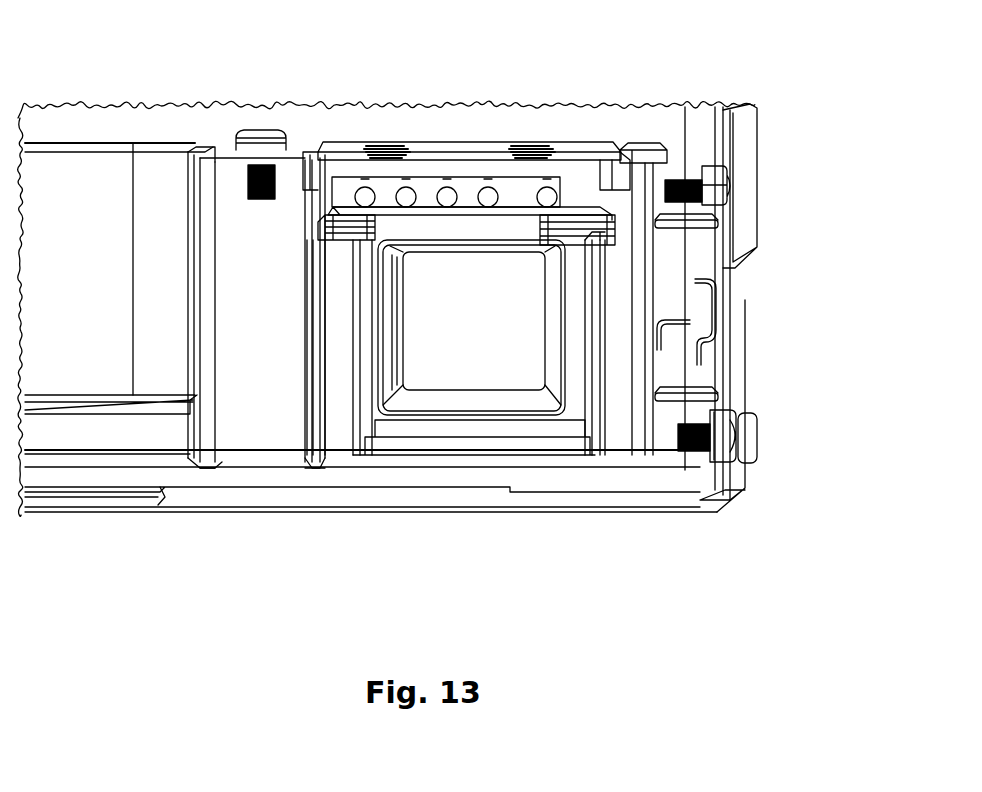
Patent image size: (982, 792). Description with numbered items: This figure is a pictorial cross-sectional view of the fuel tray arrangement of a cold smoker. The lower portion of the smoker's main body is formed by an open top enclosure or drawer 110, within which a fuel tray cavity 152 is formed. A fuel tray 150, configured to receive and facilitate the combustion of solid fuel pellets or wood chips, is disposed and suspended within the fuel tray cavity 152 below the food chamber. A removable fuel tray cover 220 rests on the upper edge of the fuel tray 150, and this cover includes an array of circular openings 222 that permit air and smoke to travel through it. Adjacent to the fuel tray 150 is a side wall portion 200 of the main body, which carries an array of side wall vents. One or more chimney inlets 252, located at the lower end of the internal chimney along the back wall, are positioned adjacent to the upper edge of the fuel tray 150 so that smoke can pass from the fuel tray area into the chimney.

The drawer 110 is at (663, 420).
The fuel tray 150 is at (400, 280).
The fuel tray cavity 152 is at (596, 295).
The side wall portion 200 is at (738, 304).
The fuel tray cover 220 is at (454, 148).
The circular openings 222 is at (372, 146).
The chimney inlets 252 is at (352, 198).